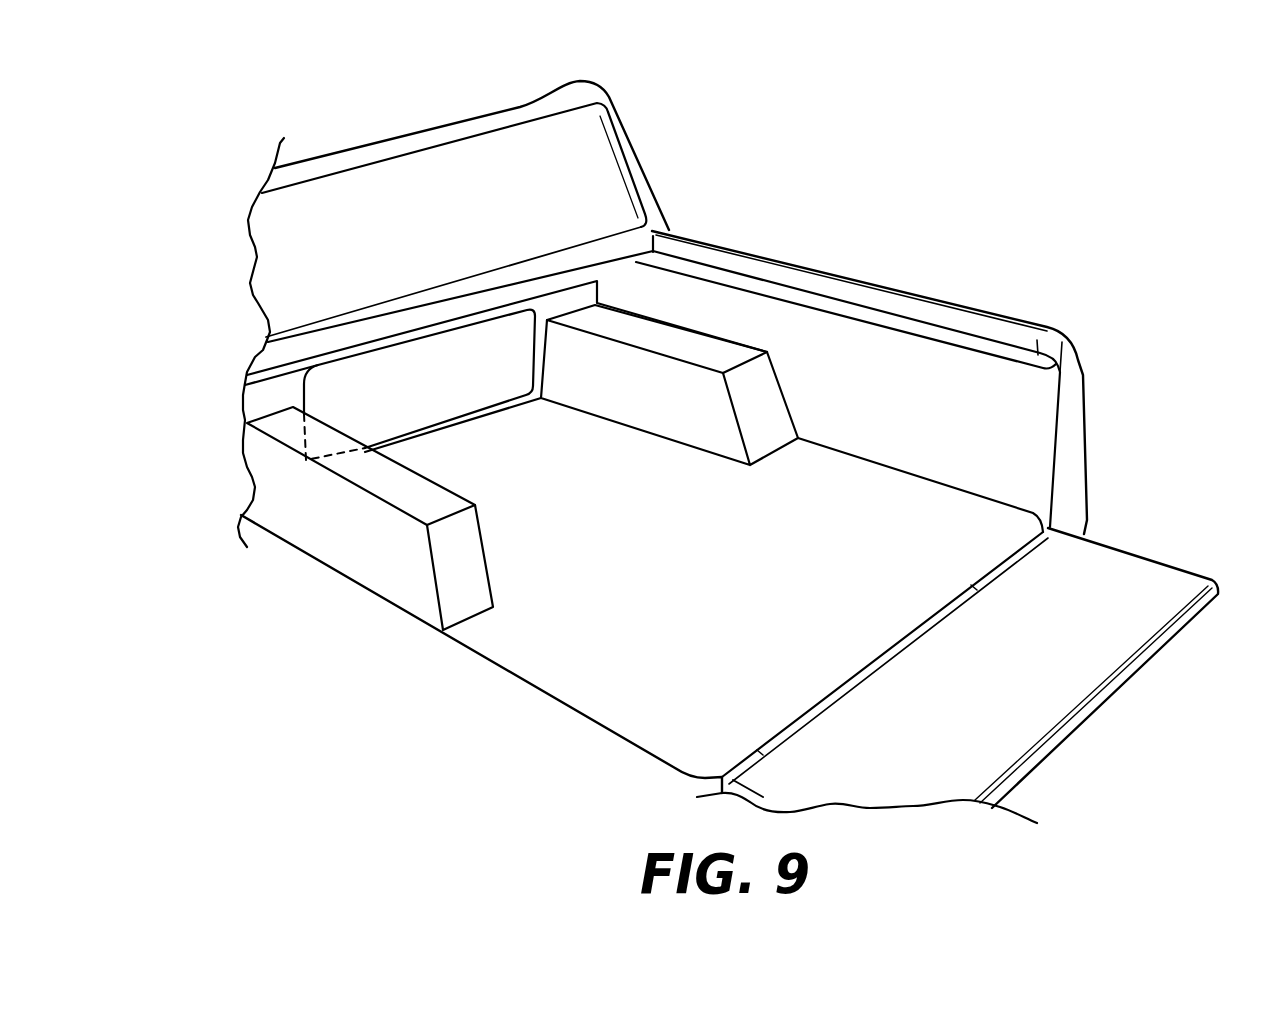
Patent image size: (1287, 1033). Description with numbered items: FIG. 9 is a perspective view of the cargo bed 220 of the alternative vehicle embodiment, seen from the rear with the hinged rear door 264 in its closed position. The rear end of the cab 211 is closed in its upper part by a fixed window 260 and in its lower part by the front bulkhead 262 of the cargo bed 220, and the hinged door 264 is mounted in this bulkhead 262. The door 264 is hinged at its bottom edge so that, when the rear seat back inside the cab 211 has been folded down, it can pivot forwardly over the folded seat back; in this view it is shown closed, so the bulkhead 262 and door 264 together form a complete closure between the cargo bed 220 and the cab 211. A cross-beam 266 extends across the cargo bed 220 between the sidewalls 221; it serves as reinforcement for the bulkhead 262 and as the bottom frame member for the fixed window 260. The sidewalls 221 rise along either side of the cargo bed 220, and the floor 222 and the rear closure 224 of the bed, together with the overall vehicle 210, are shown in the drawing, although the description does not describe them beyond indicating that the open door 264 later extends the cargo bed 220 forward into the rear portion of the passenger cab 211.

The vehicle cab 210 is at (464, 286).
The cab 211 is at (497, 121).
The fixed window 260 is at (533, 208).
The front bulkhead 262 is at (561, 305).
The hinged door 264 is at (461, 393).
The cross-beam 266 is at (410, 313).
The cargo bed 220 is at (729, 525).
The sidewalls 221 is at (977, 418).
The bed floor 222 is at (740, 565).
The tailgate 224 is at (1003, 706).